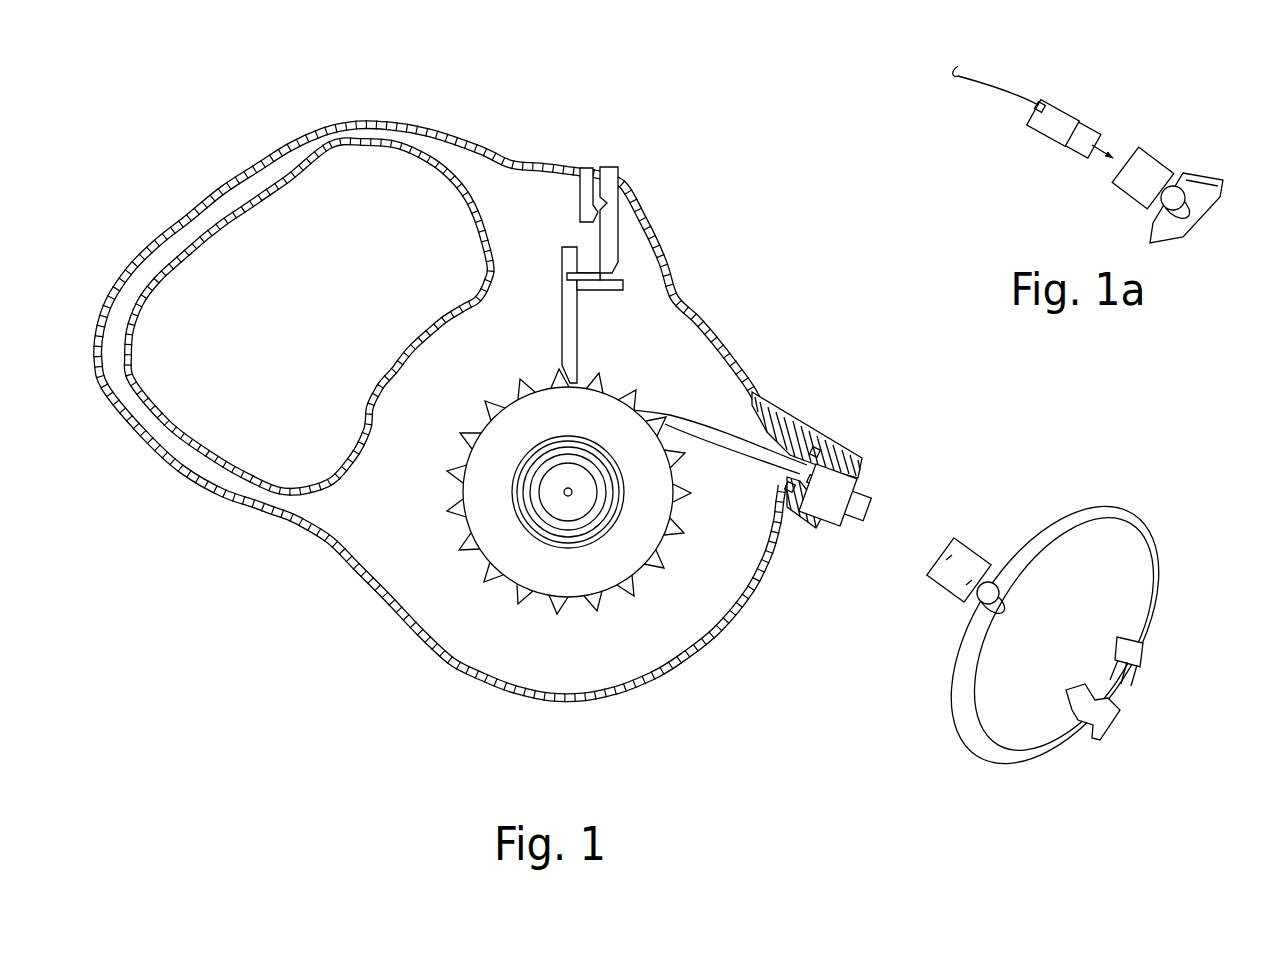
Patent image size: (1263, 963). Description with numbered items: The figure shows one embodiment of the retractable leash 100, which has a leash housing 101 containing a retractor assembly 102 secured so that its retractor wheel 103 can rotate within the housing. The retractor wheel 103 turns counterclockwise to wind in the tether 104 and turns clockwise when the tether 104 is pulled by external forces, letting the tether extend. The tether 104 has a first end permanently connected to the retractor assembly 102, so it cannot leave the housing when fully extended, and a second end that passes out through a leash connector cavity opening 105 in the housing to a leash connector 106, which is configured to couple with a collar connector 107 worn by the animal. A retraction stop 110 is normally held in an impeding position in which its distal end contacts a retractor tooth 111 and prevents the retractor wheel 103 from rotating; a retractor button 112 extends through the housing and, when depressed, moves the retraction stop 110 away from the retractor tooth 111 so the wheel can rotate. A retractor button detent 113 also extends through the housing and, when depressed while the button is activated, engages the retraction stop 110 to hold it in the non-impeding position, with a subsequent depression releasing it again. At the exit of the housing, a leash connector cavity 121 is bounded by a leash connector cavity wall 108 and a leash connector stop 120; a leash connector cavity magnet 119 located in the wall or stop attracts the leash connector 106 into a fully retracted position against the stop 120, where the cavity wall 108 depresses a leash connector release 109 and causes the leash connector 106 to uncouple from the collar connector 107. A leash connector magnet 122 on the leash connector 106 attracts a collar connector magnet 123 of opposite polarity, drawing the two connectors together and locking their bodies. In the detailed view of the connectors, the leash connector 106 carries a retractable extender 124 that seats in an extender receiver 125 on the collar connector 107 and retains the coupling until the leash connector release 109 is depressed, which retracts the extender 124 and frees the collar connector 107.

In FIG. 1, the retractable leash 100 is at (128, 125).
In FIG. 1, the leash housing 101 is at (292, 568).
In FIG. 1, the retractor assembly 102 is at (521, 551).
In FIG. 1, the retractor wheel 103 is at (522, 600).
In FIG. 1, the tether 104 is at (700, 415).
In FIG. 1, the leash connector cavity opening 105 is at (873, 480).
In FIG. 1, the leash connector 106 is at (880, 513).
In FIG. 1A, the leash connector 106 is at (1108, 92).
In FIG. 1, the collar connector 107 is at (945, 625).
In FIG. 1, the leash connector cavity wall 108 is at (822, 457).
In FIG. 1A, the leash connector release 109 is at (1060, 89).
In FIG. 1, the retraction stop 110 is at (562, 262).
In FIG. 1, the retractor tooth 111 is at (560, 380).
In FIG. 1, the retractor button 112 is at (619, 176).
In FIG. 1, the retractor button detent 113 is at (581, 168).
In FIG. 1, the leash connector cavity magnet 119 is at (806, 448).
In FIG. 1, the leash connector stop 120 is at (830, 508).
In FIG. 1, the leash connector cavity 121 is at (797, 513).
In FIG. 1, the leash connector magnet 122 is at (817, 480).
In FIG. 1A, the leash connector magnet 122 is at (1038, 104).
In FIG. 1, the collar connector magnet 123 is at (935, 556).
In FIG. 1, the retractable extender 124 is at (843, 521).
In FIG. 1A, the retractable extender 124 is at (1073, 152).
In FIG. 1, the extender receiver 125 is at (975, 542).
In FIG. 1A, the extender receiver 125 is at (1165, 140).